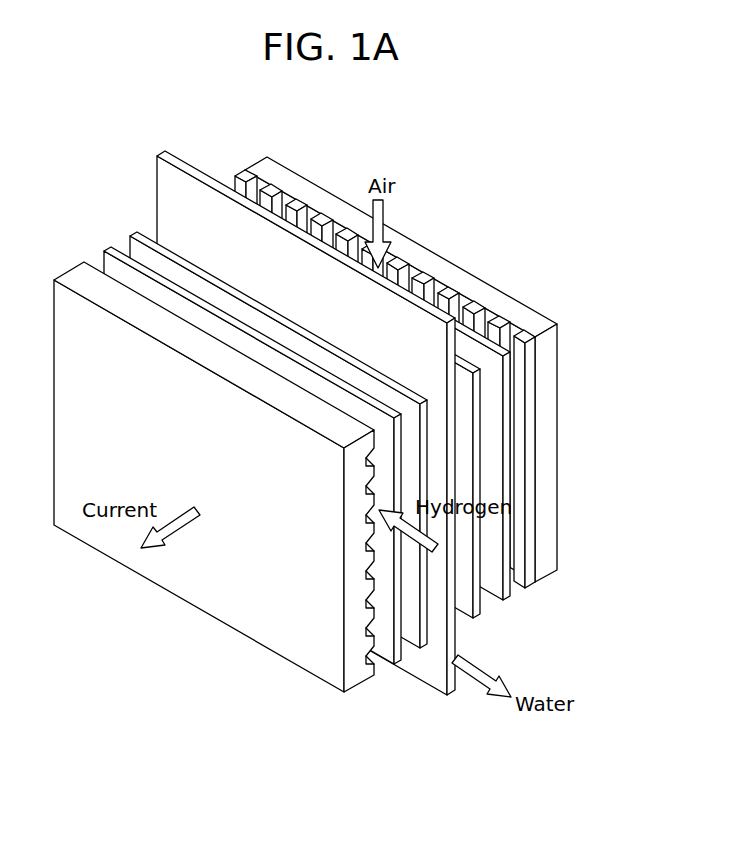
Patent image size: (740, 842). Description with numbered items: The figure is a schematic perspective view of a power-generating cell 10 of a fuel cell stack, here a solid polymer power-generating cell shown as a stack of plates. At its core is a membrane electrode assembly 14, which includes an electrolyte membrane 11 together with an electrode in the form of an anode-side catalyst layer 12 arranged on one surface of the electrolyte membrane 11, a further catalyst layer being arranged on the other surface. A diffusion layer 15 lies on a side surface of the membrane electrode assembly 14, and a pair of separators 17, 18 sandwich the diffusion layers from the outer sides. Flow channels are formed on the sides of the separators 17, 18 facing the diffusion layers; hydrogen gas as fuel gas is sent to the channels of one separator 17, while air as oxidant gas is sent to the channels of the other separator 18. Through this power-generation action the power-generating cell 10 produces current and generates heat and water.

The power-generating cell 10 is at (348, 483).
The electrolyte membrane 11 is at (432, 668).
The anode-side catalyst layer 12 is at (409, 635).
The membrane electrode assembly 14 is at (305, 483).
The diffusion layer 15 is at (386, 652).
The separator 17 is at (213, 590).
The separator 18 is at (542, 531).